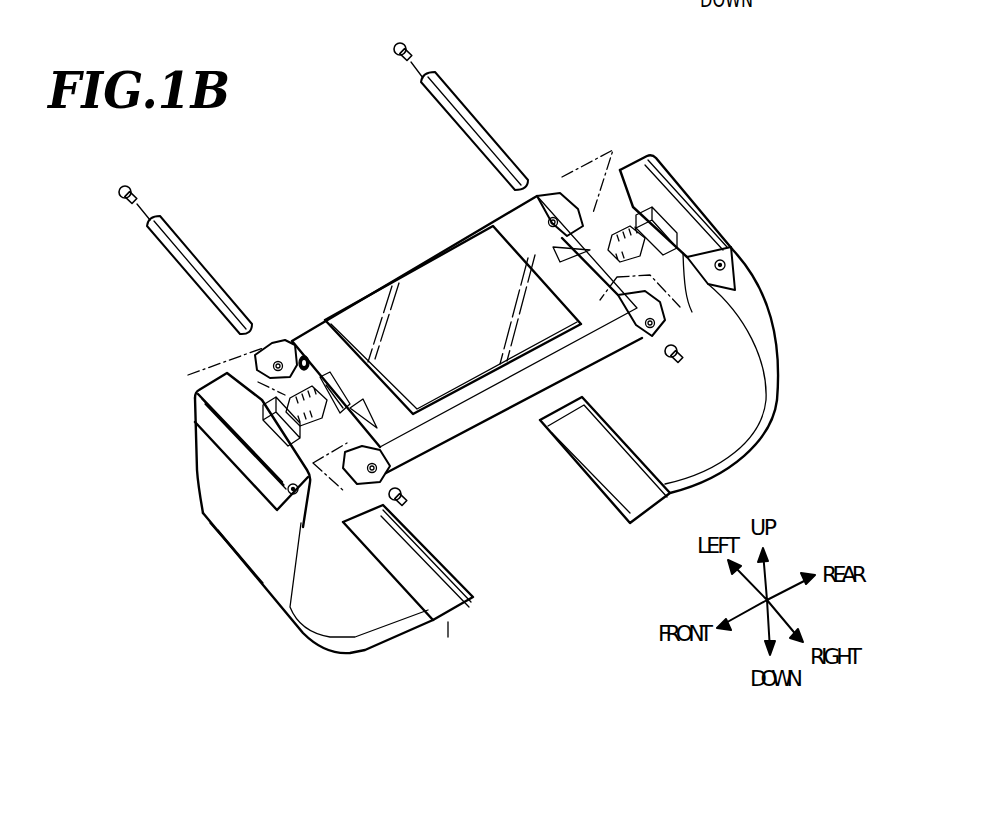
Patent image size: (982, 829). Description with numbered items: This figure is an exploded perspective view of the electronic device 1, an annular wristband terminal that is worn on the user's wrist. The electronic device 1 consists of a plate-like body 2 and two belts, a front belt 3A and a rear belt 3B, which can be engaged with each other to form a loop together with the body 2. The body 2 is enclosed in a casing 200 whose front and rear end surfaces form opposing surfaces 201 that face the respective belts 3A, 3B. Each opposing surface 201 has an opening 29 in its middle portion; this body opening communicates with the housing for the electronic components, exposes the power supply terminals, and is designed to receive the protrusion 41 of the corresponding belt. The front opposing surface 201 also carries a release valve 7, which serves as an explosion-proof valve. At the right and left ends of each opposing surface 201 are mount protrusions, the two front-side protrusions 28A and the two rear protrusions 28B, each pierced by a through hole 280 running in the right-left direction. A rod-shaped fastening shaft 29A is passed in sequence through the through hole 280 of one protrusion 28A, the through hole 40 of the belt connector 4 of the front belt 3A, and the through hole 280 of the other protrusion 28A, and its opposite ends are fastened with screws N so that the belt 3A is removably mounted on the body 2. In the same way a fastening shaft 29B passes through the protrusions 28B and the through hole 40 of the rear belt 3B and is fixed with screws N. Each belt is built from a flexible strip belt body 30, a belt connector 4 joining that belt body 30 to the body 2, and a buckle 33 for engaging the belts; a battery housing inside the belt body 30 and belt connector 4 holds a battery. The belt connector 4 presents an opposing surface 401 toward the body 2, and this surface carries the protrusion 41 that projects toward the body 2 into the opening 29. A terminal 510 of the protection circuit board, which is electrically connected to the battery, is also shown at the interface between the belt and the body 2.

The electronic device 1 is at (313, 171).
The body 2 is at (448, 247).
The casing 200 is at (440, 296).
The opposing surface 201 is at (553, 247).
The opening 29 is at (333, 380).
The release valve 7 is at (306, 356).
The front-side protrusion 28A is at (268, 343).
The rear protrusion 28B is at (550, 192).
The through hole 280 is at (280, 360).
The fastening shaft 29A is at (182, 243).
The fastening shaft 29B is at (473, 119).
The screw N is at (133, 200).
The terminal 510 is at (297, 400).
The protrusion 41 is at (273, 413).
The belt 3A is at (468, 464).
The belt 3B is at (701, 339).
The belt connector 4 is at (250, 445).
The through hole 40 is at (297, 494).
The opposing surface 401 is at (690, 258).
The belt body 30 is at (283, 527).
The buckle 33 is at (450, 640).